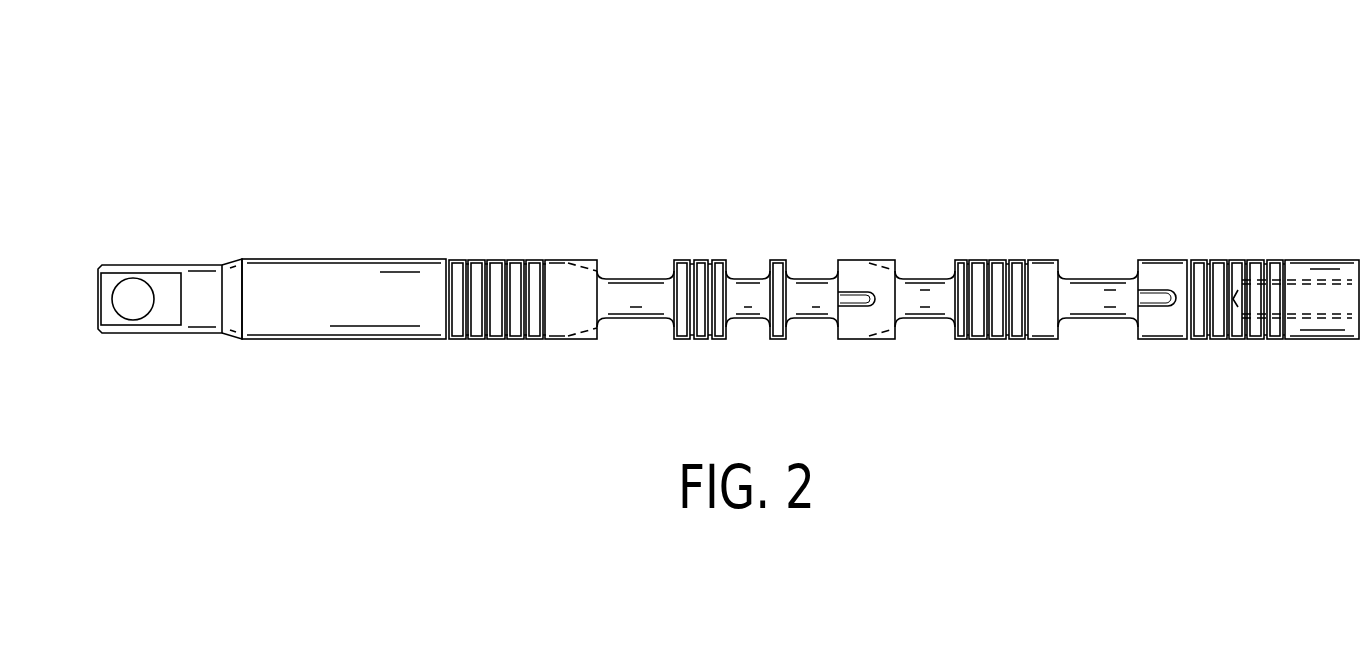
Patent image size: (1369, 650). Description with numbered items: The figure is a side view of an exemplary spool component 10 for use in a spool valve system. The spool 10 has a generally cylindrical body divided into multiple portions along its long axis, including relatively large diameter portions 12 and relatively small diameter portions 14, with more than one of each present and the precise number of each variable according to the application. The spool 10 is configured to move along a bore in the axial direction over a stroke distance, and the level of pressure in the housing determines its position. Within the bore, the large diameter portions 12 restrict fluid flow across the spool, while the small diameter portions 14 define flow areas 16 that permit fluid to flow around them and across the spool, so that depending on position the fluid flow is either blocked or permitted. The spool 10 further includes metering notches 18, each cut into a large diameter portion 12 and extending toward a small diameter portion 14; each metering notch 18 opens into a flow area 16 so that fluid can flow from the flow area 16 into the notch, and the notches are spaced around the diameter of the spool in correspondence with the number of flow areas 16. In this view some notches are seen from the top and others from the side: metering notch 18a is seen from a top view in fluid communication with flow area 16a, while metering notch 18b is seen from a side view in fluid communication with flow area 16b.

The spool component 10 is at (466, 133).
The large diameter portion 12 is at (872, 339).
The small diameter portion 14 is at (802, 308).
The flow area 16 is at (654, 264).
The flow area 16a is at (833, 264).
The flow area 16b is at (946, 264).
The metering notch 18 is at (1152, 300).
The metering notch 18a is at (856, 296).
The metering notch 18b is at (890, 268).